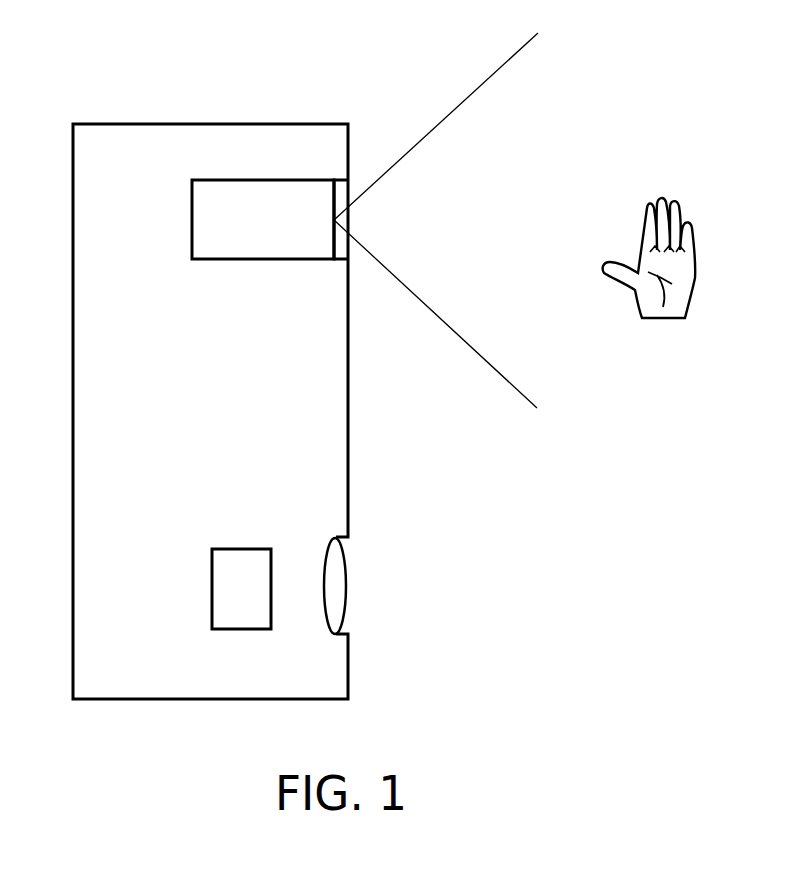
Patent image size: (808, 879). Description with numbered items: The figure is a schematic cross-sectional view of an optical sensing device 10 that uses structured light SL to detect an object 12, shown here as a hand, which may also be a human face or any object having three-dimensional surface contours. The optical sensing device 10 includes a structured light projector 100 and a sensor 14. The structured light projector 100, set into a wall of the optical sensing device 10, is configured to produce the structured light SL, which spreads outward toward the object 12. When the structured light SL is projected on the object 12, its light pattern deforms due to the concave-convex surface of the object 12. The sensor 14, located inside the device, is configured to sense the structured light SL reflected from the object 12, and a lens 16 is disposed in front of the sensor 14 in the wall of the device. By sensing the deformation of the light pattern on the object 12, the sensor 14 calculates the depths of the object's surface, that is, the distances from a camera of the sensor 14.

The optical sensing device 10 is at (126, 678).
The structured light projector 100 is at (200, 217).
The structured light SL is at (457, 107).
The object 12 is at (688, 270).
The sensor 14 is at (222, 588).
The lens 16 is at (334, 540).